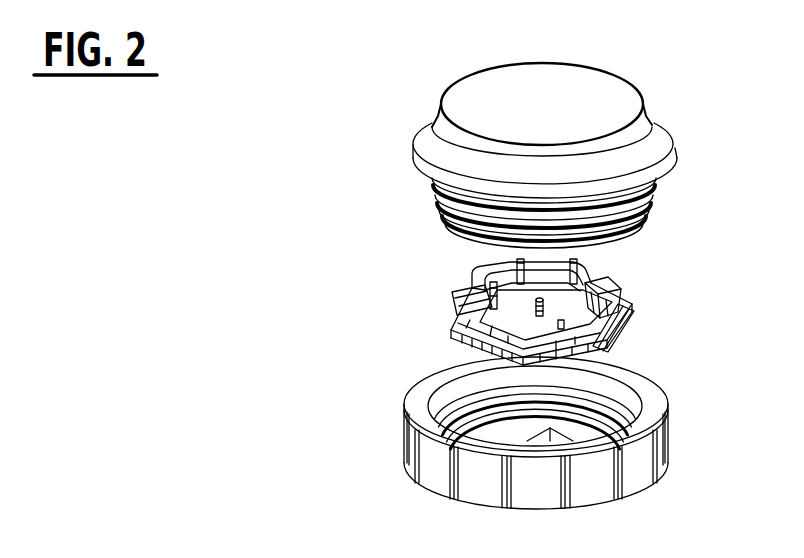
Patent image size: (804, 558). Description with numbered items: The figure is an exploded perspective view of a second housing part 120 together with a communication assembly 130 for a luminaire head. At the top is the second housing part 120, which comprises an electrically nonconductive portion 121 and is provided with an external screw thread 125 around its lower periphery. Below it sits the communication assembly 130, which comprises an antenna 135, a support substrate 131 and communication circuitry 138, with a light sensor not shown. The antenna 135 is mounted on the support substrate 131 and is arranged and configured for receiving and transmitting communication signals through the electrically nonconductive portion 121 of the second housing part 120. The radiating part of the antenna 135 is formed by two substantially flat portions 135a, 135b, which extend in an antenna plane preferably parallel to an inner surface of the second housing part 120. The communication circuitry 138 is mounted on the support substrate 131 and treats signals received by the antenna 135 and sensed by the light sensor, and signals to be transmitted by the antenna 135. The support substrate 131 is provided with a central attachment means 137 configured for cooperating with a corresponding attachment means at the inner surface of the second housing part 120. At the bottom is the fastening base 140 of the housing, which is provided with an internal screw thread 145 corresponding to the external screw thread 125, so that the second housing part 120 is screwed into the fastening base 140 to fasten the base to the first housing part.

The second housing part 120 is at (538, 127).
The electrically nonconductive portion 121 is at (527, 84).
The external screw thread 125 is at (430, 198).
The communication assembly 130 is at (546, 275).
The support substrate 131 is at (455, 322).
The antenna 135 is at (594, 262).
The flat portion of the antenna 135a is at (622, 305).
The flat portion of the antenna 135b is at (491, 284).
The central attachment means 137 is at (534, 308).
The communication circuitry 138 is at (472, 290).
The fastening base 140 is at (574, 437).
The internal screw thread 145 is at (641, 394).